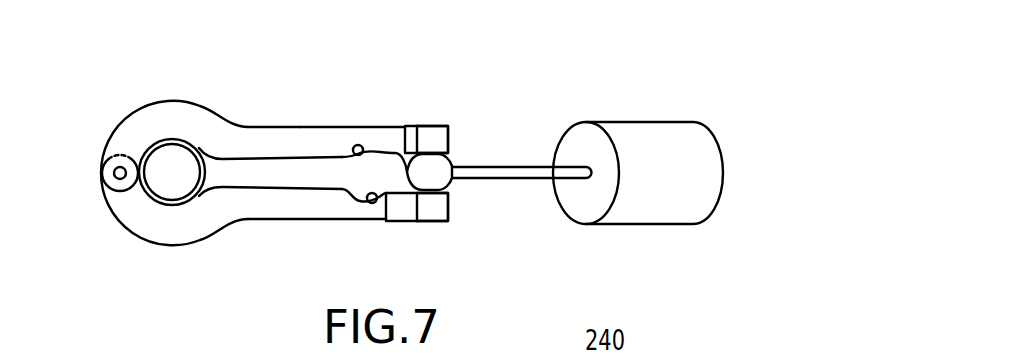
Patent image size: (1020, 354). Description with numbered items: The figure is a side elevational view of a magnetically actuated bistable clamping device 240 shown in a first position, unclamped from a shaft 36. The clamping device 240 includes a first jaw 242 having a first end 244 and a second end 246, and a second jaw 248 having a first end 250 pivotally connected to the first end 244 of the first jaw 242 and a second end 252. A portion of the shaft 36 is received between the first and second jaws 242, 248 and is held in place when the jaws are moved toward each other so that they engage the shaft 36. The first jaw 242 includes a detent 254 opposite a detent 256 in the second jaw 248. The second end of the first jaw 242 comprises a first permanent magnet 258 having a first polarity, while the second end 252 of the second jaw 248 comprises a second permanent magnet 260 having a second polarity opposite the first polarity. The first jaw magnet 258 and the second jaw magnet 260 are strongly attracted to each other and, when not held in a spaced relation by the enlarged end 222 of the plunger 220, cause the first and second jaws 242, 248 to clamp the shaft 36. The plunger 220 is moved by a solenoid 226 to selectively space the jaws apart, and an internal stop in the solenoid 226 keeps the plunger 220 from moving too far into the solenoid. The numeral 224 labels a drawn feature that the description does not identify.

The shaft 36 is at (175, 156).
The plunger 220 is at (530, 167).
The enlarged end 222 is at (442, 168).
The first magnet 224 is at (405, 138).
The solenoid 226 is at (665, 132).
The bistable magnetic clamping device 240 is at (570, 59).
The first jaw 242 is at (272, 128).
The first end of first jaw 244 is at (130, 127).
The second end of first jaw 246 is at (385, 138).
The second jaw 248 is at (275, 207).
The first end of second jaw 250 is at (136, 220).
The second end of second jaw 252 is at (385, 197).
The detent 254 is at (337, 128).
The detent 256 is at (360, 212).
The first permanent magnet 258 is at (448, 140).
The second permanent magnet 260 is at (448, 218).